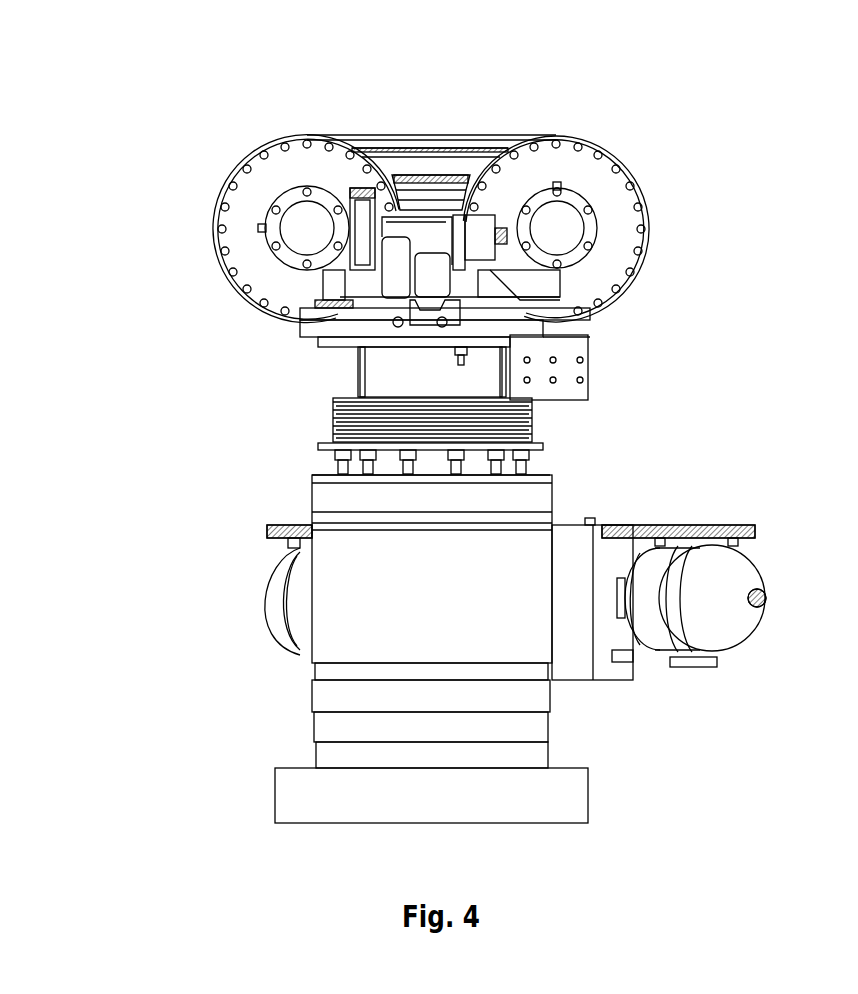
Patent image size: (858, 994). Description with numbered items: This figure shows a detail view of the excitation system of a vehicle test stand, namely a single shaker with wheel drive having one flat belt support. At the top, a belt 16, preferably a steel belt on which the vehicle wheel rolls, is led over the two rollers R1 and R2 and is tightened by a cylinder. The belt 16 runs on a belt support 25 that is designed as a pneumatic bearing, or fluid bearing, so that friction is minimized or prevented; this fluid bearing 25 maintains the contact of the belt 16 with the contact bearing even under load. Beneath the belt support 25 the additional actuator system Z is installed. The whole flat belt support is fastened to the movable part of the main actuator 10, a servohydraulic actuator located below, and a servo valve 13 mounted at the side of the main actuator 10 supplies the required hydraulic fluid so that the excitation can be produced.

The belt 16 is at (327, 135).
The belt support 25 is at (403, 148).
The additional actuator system Z is at (463, 178).
The roller R2 is at (250, 212).
The roller R1 is at (615, 212).
The main actuator 10 is at (358, 537).
The servo valve 13 is at (608, 547).